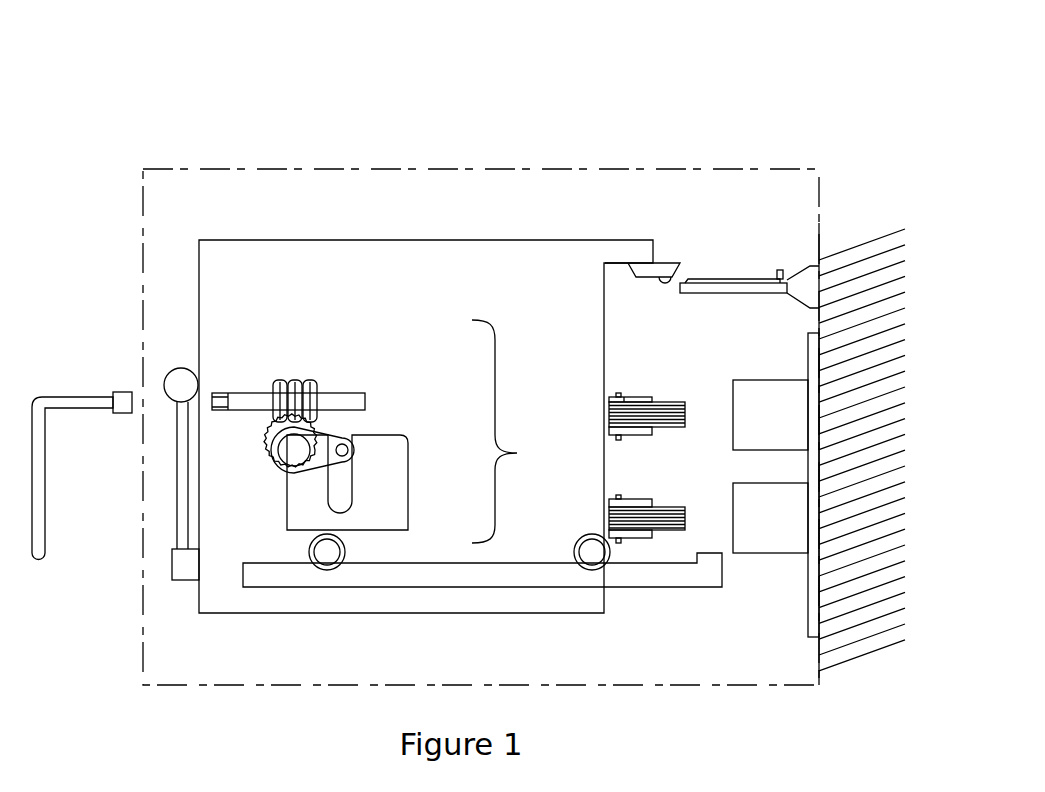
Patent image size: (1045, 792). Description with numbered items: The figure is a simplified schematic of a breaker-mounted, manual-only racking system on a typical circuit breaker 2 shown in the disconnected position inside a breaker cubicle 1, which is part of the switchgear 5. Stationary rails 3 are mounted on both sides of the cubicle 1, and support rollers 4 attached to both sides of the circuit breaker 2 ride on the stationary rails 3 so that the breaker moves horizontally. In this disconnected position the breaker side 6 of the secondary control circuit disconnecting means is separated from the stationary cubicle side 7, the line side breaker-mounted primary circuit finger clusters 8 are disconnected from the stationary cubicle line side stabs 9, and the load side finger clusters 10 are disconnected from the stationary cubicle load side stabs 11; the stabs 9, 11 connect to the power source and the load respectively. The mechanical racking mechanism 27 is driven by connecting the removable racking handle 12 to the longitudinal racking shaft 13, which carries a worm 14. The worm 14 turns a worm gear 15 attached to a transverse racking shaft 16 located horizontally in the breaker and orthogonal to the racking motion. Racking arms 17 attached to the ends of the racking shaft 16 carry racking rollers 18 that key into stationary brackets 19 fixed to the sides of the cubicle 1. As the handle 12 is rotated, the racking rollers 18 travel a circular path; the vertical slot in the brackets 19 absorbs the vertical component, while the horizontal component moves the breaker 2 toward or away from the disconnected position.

The breaker cubicle 1 is at (405, 169).
The circuit breaker 2 is at (323, 238).
The stationary rails 3 is at (287, 587).
The support rollers 4 is at (307, 550).
The switchgear 5 is at (893, 338).
The breaker side of secondary control circuit disconnecting means 6 is at (663, 263).
The stationary cubicle side of secondary control circuit disconnecting means 7 is at (728, 287).
The line side primary circuit finger clusters 8 is at (672, 402).
The stationary cubicle line side stabs 9 is at (762, 380).
The load side primary circuit finger clusters 10 is at (670, 507).
The stationary cubicle load side stabs 11 is at (733, 500).
The racking handle 12 is at (77, 395).
The racking shaft 13 is at (252, 393).
The worm 14 is at (296, 380).
The worm gear 15 is at (272, 474).
The racking shaft 16 is at (263, 447).
The racking arms 17 is at (325, 436).
The racking rollers 18 is at (346, 446).
The stationary brackets 19 is at (410, 476).
The mechanical racking mechanism 27 is at (517, 431).